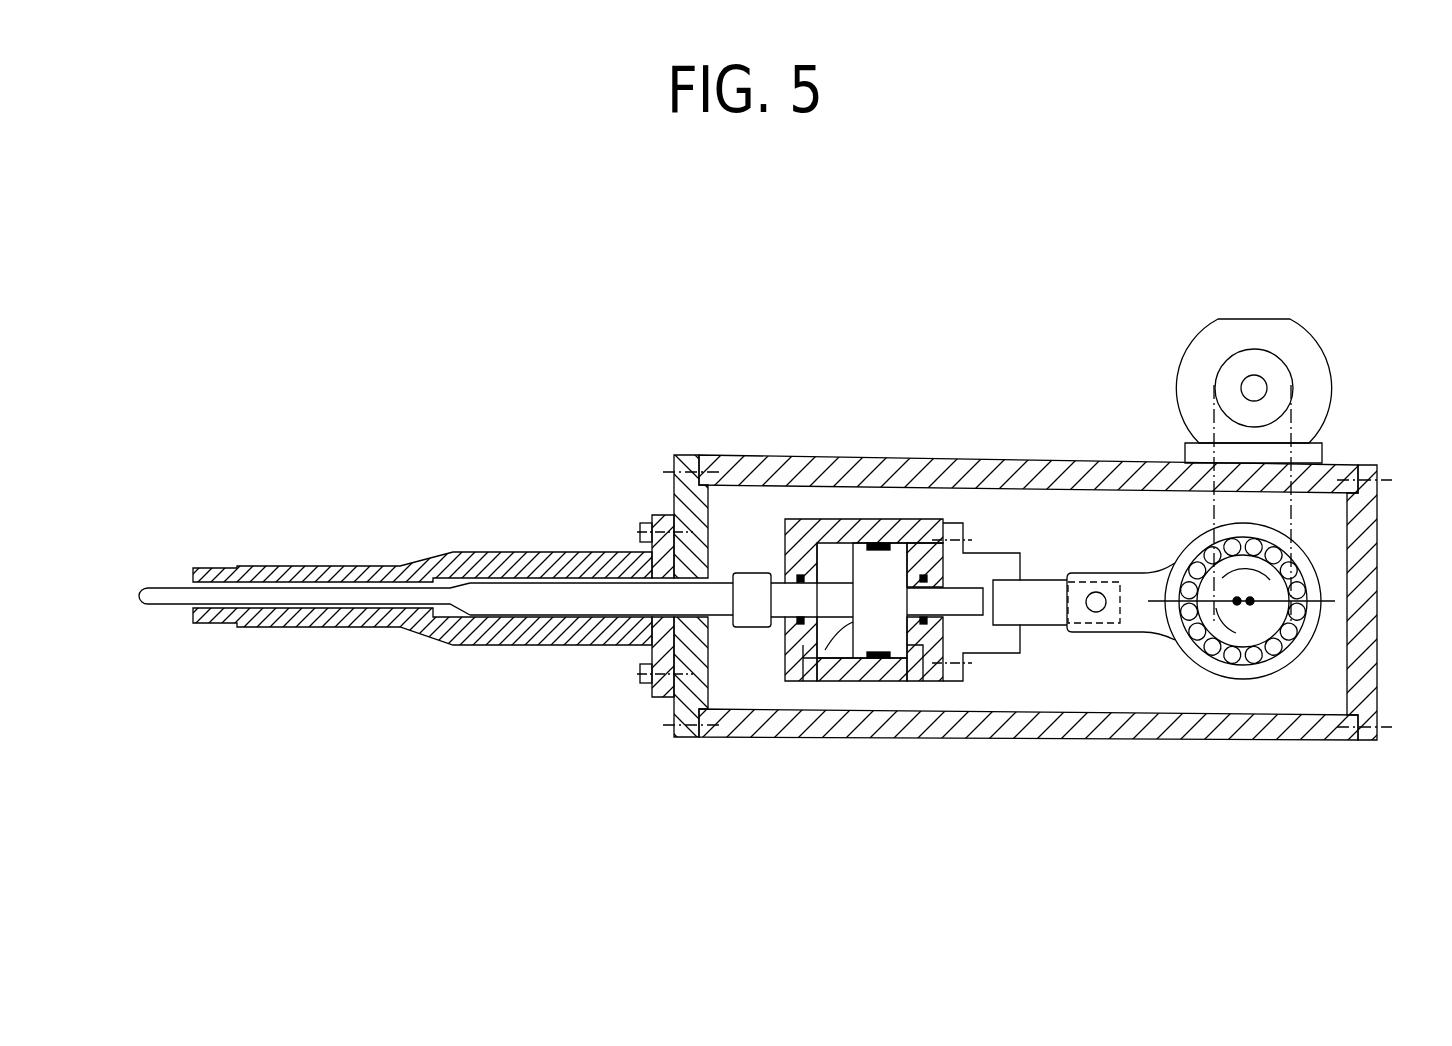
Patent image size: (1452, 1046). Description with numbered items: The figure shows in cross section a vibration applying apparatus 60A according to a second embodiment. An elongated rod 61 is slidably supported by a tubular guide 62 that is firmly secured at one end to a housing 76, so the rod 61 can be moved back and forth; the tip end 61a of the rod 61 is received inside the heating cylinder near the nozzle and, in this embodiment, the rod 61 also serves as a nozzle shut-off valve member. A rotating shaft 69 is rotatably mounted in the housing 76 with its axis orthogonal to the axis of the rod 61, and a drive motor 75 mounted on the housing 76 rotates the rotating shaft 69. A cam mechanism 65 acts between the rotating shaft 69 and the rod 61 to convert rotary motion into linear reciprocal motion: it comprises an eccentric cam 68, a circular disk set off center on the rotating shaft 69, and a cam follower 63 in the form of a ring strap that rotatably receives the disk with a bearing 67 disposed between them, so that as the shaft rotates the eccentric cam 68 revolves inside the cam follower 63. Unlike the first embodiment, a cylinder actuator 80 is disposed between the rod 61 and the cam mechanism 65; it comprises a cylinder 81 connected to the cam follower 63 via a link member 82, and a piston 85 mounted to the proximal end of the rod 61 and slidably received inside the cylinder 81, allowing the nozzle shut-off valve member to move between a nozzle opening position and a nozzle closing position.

The vibration applying apparatus 60A is at (646, 368).
The rod 61 is at (325, 593).
The tip end 61a is at (168, 583).
The tubular guide 62 is at (348, 565).
The cam follower 63 is at (1167, 565).
The cam mechanism 65 is at (1187, 642).
The bearing 67 is at (1290, 630).
The eccentric cam 68 is at (1212, 622).
The rotating shaft 69 is at (1252, 618).
The drive motor 75 is at (1256, 318).
The housing 76 is at (938, 738).
The cylinder actuator 80 is at (800, 513).
The cylinder 81 is at (870, 520).
The link member 82 is at (998, 552).
The piston 85 is at (852, 628).